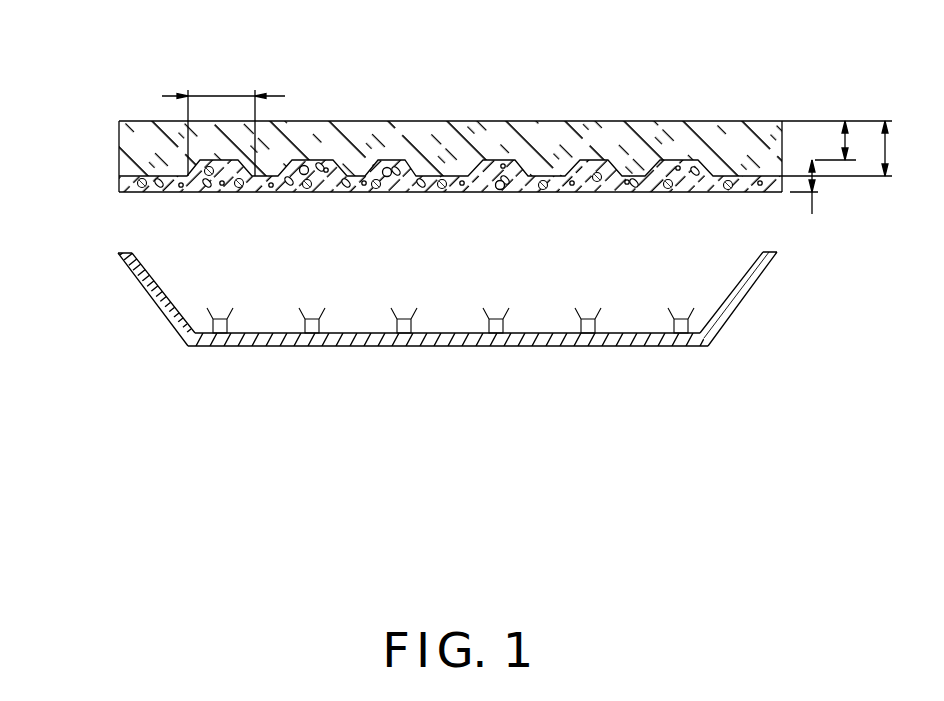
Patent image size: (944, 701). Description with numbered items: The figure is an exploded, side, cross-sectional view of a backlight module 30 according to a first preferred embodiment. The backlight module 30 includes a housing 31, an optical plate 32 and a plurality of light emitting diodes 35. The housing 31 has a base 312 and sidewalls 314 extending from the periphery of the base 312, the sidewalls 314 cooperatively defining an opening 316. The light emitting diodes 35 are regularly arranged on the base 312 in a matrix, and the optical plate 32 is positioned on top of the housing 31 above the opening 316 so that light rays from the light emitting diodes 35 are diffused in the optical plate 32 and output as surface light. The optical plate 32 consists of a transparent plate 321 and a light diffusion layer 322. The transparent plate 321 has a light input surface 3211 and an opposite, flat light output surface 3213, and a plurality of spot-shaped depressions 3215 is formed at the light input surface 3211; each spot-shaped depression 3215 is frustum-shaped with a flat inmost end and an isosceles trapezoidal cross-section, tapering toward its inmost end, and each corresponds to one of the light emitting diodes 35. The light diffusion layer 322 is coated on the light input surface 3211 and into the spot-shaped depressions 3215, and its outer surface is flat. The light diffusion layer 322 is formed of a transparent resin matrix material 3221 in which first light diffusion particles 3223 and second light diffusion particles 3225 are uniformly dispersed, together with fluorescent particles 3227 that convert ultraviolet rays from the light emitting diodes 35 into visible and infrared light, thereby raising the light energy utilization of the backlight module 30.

The backlight module 30 is at (494, 66).
The optical plate 32 is at (40, 128).
The transparent plate 321 is at (119, 139).
The light diffusion layer 322 is at (119, 180).
The light input surface 3211 is at (355, 172).
The light output surface 3213 is at (747, 122).
The spot-shaped depression 3215 is at (657, 166).
The transparent resin matrix material 3221 is at (152, 184).
The first light diffusion particles 3223 is at (498, 180).
The second light diffusion particles 3225 is at (396, 168).
The fluorescent particles 3227 is at (572, 185).
The housing 31 is at (852, 231).
The base 312 is at (662, 346).
The sidewalls 314 is at (760, 278).
The opening 316 is at (740, 254).
The light emitting diodes 35 is at (311, 316).